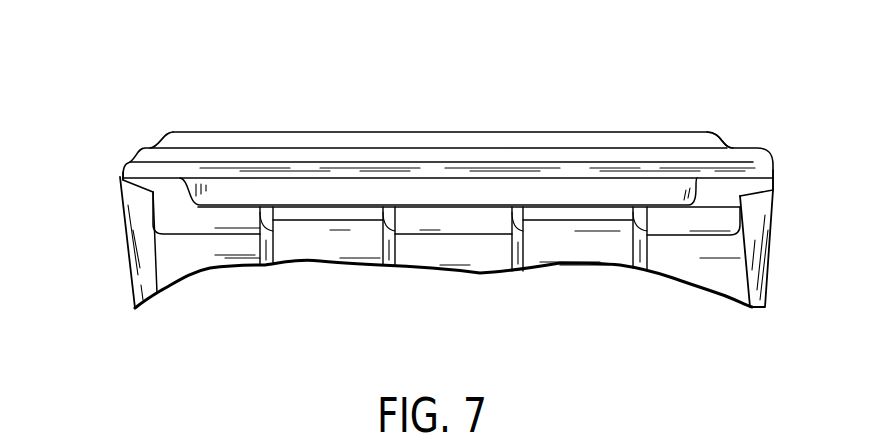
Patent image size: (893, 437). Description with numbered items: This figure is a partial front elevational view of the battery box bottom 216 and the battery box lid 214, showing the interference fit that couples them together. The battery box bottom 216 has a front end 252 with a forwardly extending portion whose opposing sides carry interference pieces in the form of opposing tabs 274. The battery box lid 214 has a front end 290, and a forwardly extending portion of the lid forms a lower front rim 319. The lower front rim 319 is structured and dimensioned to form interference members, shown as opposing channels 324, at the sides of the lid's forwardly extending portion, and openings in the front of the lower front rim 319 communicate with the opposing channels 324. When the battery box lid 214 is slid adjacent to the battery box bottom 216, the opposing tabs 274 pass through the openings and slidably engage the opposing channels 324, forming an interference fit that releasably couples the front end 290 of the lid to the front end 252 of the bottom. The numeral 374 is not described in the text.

The battery box lid 214 is at (136, 134).
The battery box bottom 216 is at (110, 297).
The front end 252 is at (322, 246).
The opposing tabs 274 is at (775, 196).
The front end 290 is at (255, 186).
The lower front rim 319 is at (773, 188).
The opposing channels 324 is at (773, 189).
The left end wall 374 is at (120, 205).